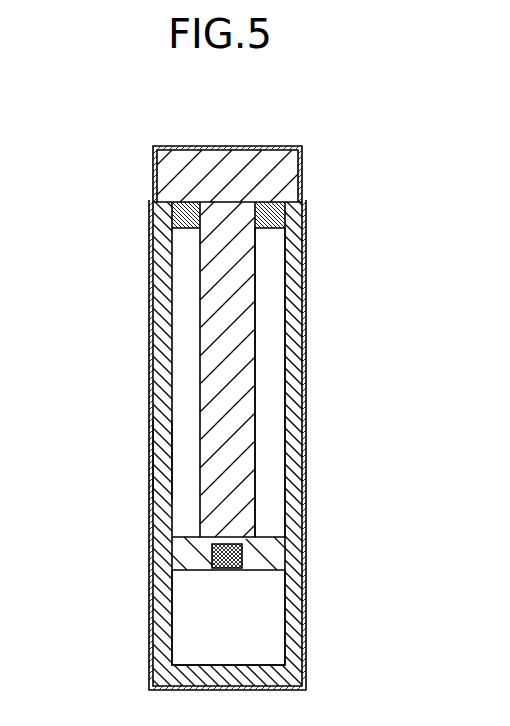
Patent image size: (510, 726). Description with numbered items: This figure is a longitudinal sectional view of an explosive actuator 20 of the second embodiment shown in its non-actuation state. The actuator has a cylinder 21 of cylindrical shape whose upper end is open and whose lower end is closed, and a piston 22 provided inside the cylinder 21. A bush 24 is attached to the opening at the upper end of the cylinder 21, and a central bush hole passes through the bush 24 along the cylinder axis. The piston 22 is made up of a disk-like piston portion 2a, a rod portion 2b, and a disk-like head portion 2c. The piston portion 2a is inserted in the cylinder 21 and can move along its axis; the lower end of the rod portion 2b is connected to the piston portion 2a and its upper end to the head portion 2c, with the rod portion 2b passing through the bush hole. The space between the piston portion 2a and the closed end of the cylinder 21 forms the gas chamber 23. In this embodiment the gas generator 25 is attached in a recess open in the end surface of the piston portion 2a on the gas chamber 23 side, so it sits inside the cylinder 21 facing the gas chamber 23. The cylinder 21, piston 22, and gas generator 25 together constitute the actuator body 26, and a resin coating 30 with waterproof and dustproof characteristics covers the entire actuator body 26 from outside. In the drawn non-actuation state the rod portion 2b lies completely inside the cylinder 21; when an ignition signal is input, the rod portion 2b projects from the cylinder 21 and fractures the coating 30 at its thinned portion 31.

The explosive actuator 20 is at (320, 106).
The head portion 2c is at (165, 175).
The thinned portion 31 is at (303, 190).
The bush 24 is at (173, 217).
The coating 30 is at (305, 262).
The cylinder 21 is at (152, 300).
The rod portion 2b is at (210, 375).
The piston 22 is at (257, 355).
The actuator body 26 is at (152, 462).
The piston portion 2a is at (182, 558).
The gas generator 25 is at (224, 570).
The gas chamber 23 is at (182, 615).